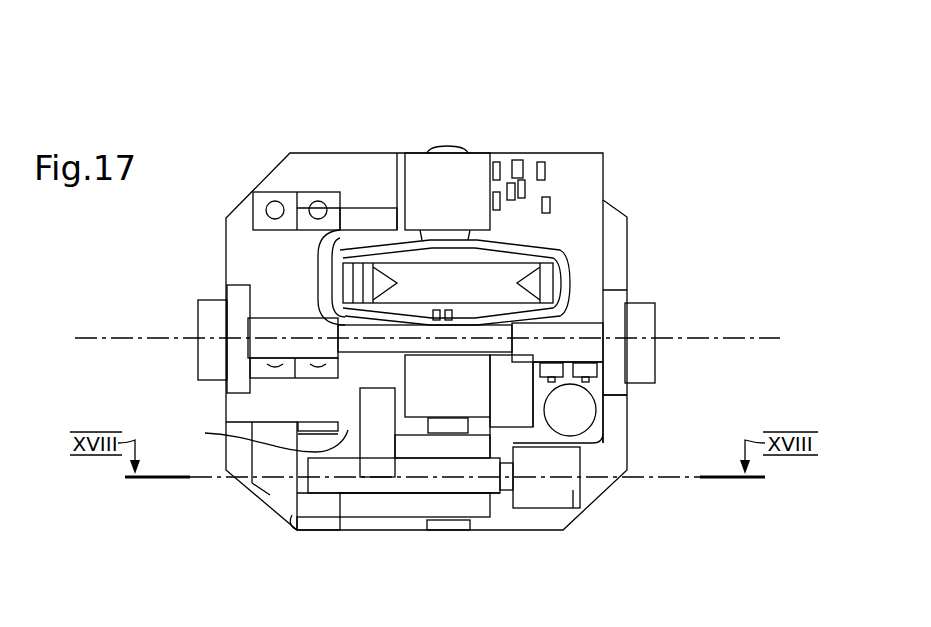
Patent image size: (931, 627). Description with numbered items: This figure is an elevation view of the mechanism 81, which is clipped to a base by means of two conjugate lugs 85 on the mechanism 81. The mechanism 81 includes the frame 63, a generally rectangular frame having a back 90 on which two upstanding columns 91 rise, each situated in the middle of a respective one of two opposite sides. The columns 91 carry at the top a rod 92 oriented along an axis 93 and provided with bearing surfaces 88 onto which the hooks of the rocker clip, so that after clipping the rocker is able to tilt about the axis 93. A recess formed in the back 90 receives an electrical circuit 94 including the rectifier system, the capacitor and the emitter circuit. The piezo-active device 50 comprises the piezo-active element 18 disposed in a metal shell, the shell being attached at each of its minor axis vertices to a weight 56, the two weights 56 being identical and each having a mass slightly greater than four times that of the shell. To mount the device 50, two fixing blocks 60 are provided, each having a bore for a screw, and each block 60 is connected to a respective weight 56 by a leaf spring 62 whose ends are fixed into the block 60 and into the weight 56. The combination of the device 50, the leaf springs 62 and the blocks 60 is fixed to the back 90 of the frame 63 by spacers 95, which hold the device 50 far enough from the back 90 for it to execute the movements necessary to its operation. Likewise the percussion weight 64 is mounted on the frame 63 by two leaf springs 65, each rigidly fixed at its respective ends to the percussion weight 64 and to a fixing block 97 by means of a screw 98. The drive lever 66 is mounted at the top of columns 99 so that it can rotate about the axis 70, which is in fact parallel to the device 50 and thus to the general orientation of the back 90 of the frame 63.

The piezo-active element 18 is at (434, 296).
The piezo-active device 50 is at (470, 126).
The weight 56 is at (434, 199).
The fixing block 60 is at (284, 197).
The leaf spring 62 is at (358, 208).
The frame 63 is at (618, 248).
The percussion weight 64 is at (415, 510).
The leaf spring 65 is at (380, 572).
The drive lever 66 is at (472, 490).
The axis 70 is at (708, 480).
The mechanism 81 is at (192, 124).
The lug 85 is at (205, 312).
The bearing surface 88 is at (278, 332).
The back 90 is at (325, 153).
The column 91 is at (233, 360).
The rod 92 is at (497, 375).
The axis 93 is at (763, 338).
The electrical circuit 94 is at (568, 153).
The spacer 95 is at (302, 190).
The fixing block 97 is at (290, 518).
The screw 98 is at (318, 530).
The column 99 is at (268, 493).